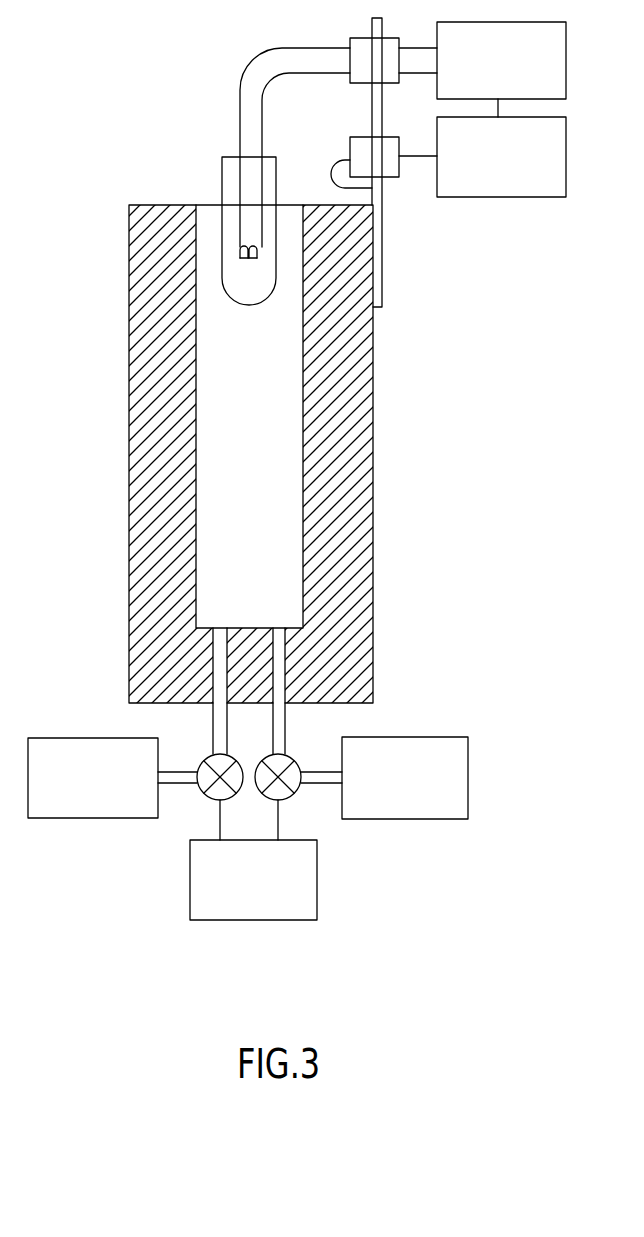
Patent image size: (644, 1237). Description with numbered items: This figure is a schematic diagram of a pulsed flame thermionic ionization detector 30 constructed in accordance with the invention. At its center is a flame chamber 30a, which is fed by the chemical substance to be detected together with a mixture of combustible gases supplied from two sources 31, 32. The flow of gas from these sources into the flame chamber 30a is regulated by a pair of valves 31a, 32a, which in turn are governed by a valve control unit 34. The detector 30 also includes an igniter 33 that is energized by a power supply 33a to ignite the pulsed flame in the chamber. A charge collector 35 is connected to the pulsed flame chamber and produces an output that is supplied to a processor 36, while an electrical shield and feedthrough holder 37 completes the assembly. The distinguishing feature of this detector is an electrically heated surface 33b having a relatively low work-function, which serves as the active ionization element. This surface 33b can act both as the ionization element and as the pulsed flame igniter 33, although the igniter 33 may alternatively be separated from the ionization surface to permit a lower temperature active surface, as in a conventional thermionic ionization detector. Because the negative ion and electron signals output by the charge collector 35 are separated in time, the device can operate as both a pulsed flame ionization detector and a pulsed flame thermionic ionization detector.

The pulsed flame thermionic ionization detector 30 is at (126, 488).
The flame chamber 30a is at (282, 557).
The gas source 31 is at (110, 796).
The valve 31a is at (200, 808).
The gas source 32 is at (428, 795).
The valve 32a is at (304, 804).
The igniter 33 is at (243, 267).
The power supply 33a is at (540, 77).
The electrically heated surface 33b is at (261, 314).
The valve control unit 34 is at (283, 900).
The charge collector 35 is at (335, 163).
The processor 36 is at (535, 177).
The electrical shield and feedthrough holder 37 is at (388, 225).